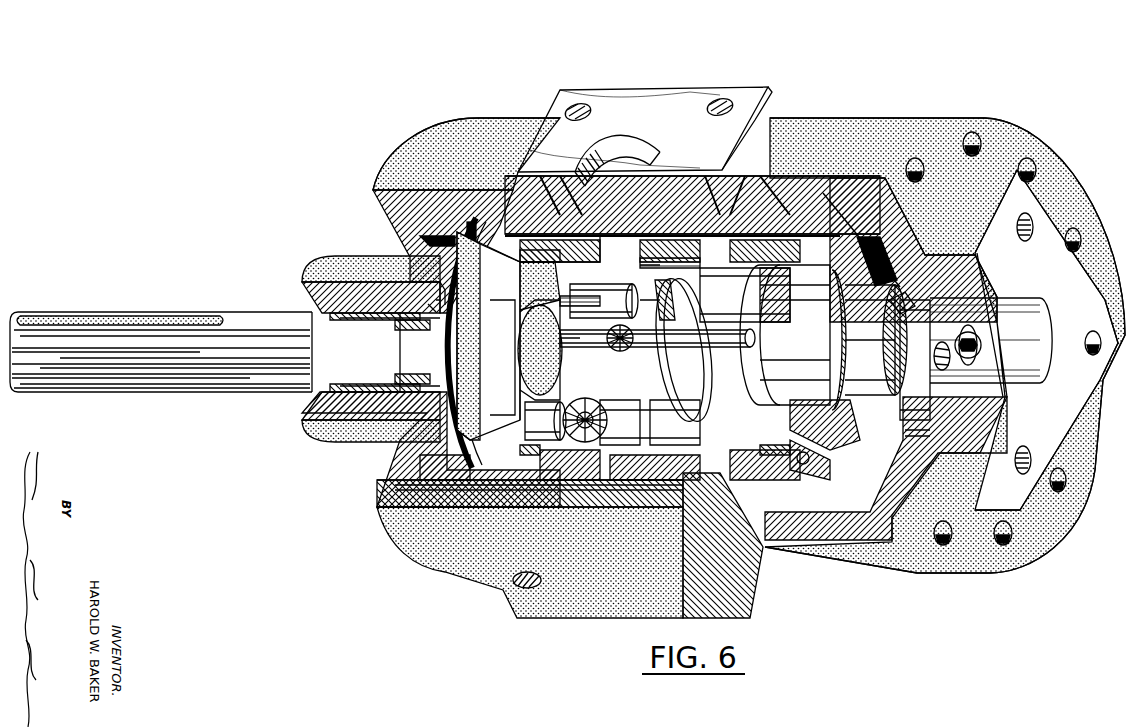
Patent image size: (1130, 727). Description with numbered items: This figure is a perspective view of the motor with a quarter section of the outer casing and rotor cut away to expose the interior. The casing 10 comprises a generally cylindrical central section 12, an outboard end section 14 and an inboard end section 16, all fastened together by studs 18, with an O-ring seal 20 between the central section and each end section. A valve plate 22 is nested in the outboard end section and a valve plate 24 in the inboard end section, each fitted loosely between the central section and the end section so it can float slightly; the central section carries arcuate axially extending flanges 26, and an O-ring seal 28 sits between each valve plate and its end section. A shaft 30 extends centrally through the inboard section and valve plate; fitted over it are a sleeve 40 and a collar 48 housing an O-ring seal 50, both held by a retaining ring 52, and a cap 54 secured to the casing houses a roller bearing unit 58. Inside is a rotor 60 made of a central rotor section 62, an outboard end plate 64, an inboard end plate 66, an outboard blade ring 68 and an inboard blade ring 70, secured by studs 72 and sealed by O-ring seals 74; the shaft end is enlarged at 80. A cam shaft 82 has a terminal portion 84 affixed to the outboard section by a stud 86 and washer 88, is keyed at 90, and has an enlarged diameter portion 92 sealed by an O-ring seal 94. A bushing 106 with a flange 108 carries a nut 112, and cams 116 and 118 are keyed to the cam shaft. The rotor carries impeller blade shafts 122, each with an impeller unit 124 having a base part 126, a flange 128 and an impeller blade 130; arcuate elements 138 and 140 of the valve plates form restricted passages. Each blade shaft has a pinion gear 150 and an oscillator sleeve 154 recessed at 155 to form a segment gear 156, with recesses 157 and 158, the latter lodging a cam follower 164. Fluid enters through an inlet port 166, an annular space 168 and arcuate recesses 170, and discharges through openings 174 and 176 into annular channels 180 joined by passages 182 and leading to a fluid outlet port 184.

The casing 10 is at (541, 69).
The central section 12 is at (662, 88).
The outboard end section 14 is at (997, 115).
The inboard end section 16 is at (399, 139).
The studs 18 is at (968, 132).
The O-ring seal 20 is at (528, 209).
The valve plate 22 is at (826, 224).
The valve plate 24 is at (466, 226).
The flanges 26 is at (497, 222).
The O-ring seal 28 is at (464, 236).
The shaft 30 is at (162, 312).
The sleeve 40 is at (444, 283).
The collar 48 is at (420, 285).
The O-ring seal 50 is at (410, 312).
The retaining ring 52 is at (376, 352).
The cap 54 is at (304, 284).
The roller bearing unit 58 is at (352, 304).
The rotor 60 is at (696, 220).
The central rotor section 62 is at (726, 234).
The outboard end plate 64 is at (740, 232).
The inboard end plate 66 is at (632, 250).
The outboard blade ring 68 is at (790, 246).
The inboard blade ring 70 is at (522, 232).
The studs 72 is at (805, 466).
The O-ring seal 74 is at (575, 452).
The enlarged terminal portion 80 is at (660, 415).
The cam shaft 82 is at (836, 310).
The terminal portion 84 is at (870, 340).
The stud 86 is at (984, 350).
The washer 88 is at (904, 360).
The key 90 is at (895, 300).
The enlarged diameter portion 92 is at (825, 423).
The O-ring seal 94 is at (841, 352).
The bushing 106 is at (806, 270).
The flange 108 is at (810, 345).
The nut 112 is at (690, 378).
The cam 116 is at (640, 265).
The cam 118 is at (700, 245).
The impeller blade shafts 122 is at (788, 351).
The impeller unit 124 is at (530, 300).
The base part 126 is at (575, 252).
The flange 128 is at (585, 240).
The impeller blade 130 is at (512, 330).
The arcuate elements 138 is at (545, 265).
The arcuate elements 140 is at (540, 312).
The pinion gear 150 is at (537, 350).
The oscillator sleeve 154 is at (610, 284).
The recess 155 is at (655, 292).
The segment gear 156 is at (620, 290).
The recess 157 is at (672, 258).
The recess 158 is at (657, 338).
The cam follower 164 is at (745, 295).
The inlet port 166 is at (642, 148).
The annular space 168 is at (581, 214).
The arcuate recesses 170 is at (532, 421).
The openings 174 is at (522, 446).
The openings 176 is at (912, 428).
The annular channels 180 is at (922, 442).
The passages 182 is at (982, 368).
The fluid outlet port 184 is at (1046, 385).